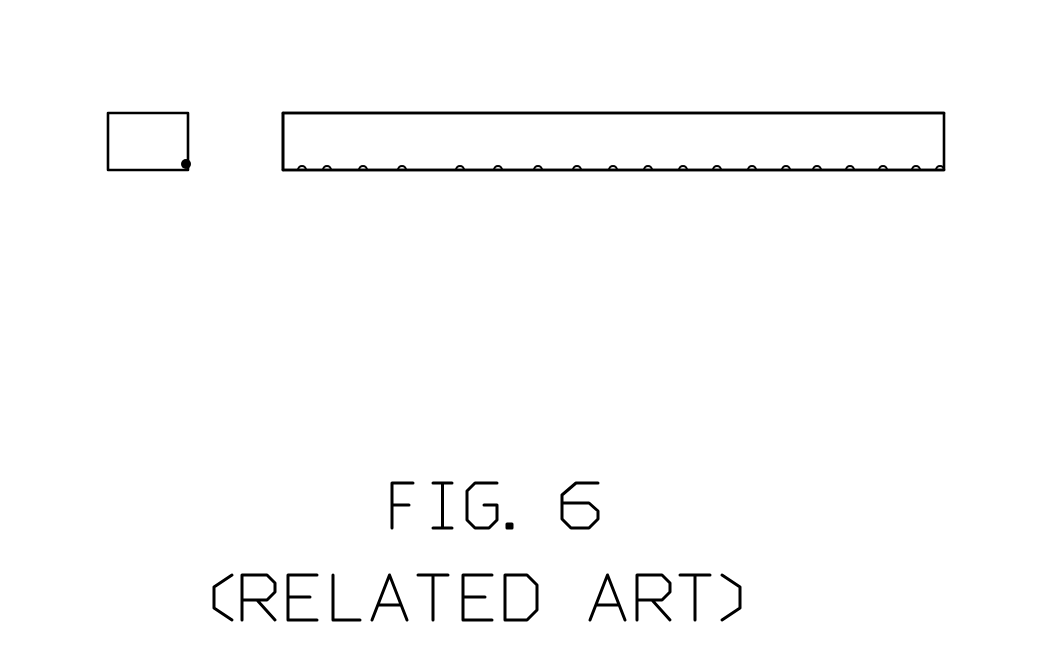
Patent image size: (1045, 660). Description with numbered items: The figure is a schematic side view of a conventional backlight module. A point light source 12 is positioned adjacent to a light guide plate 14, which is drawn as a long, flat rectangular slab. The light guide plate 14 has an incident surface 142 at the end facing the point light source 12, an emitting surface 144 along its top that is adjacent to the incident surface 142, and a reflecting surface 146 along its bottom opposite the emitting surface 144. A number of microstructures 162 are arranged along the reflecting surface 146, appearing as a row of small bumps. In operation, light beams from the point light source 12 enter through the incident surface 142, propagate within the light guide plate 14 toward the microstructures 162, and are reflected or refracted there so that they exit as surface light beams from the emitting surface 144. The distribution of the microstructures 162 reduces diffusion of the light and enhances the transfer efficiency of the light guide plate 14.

The point light source 12 is at (153, 127).
The light guide plate 14 is at (389, 140).
The incident surface 142 is at (283, 137).
The emitting surface 144 is at (513, 112).
The reflecting surface 146 is at (325, 220).
The microstructures 162 is at (507, 220).